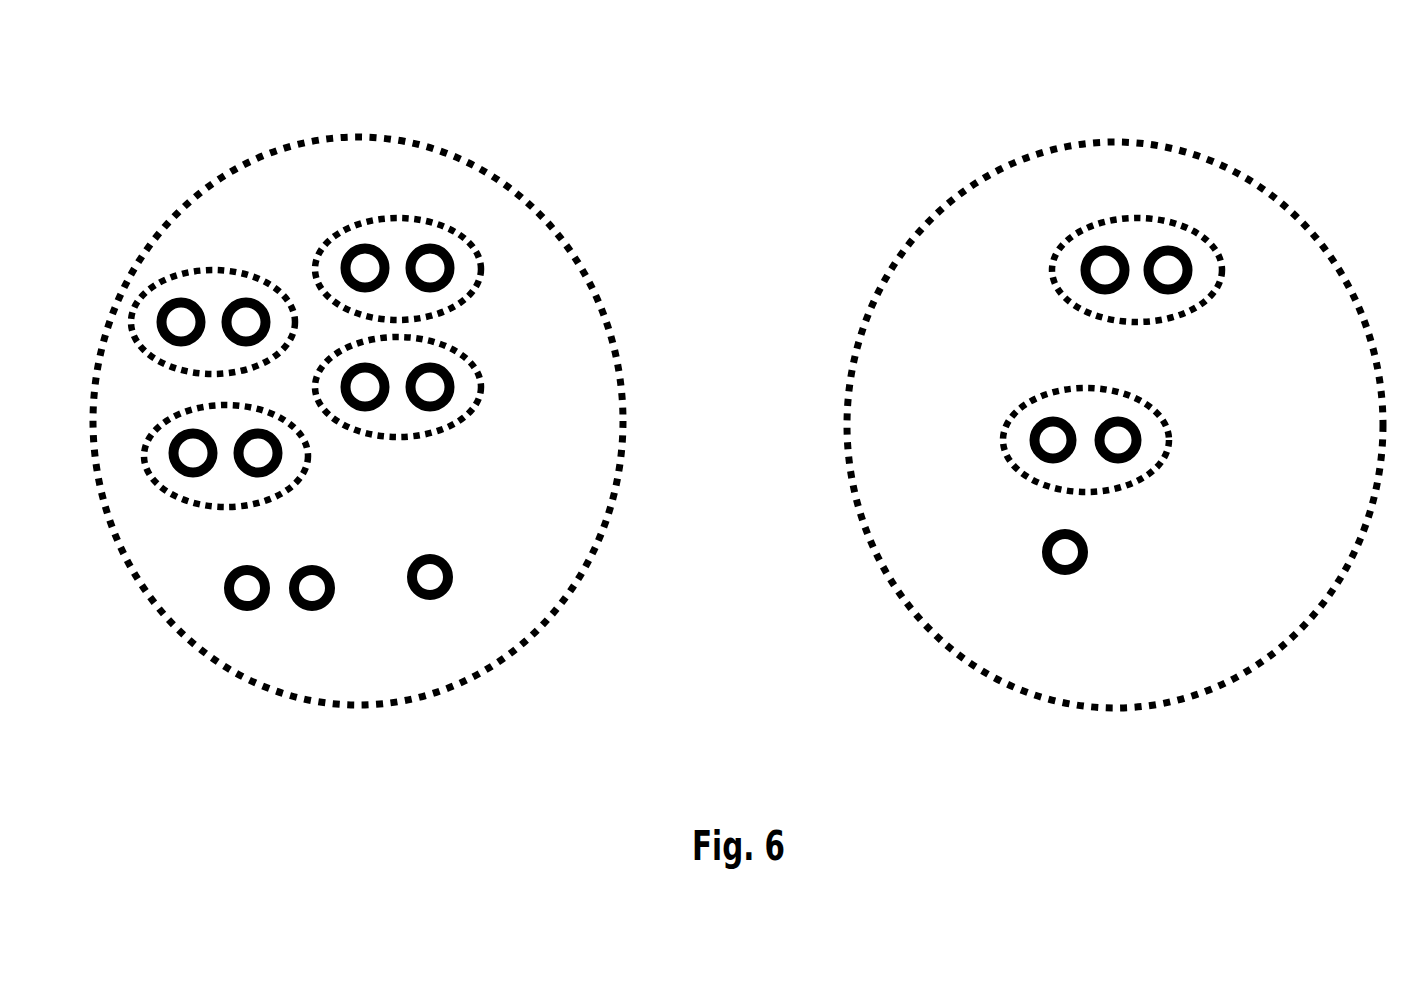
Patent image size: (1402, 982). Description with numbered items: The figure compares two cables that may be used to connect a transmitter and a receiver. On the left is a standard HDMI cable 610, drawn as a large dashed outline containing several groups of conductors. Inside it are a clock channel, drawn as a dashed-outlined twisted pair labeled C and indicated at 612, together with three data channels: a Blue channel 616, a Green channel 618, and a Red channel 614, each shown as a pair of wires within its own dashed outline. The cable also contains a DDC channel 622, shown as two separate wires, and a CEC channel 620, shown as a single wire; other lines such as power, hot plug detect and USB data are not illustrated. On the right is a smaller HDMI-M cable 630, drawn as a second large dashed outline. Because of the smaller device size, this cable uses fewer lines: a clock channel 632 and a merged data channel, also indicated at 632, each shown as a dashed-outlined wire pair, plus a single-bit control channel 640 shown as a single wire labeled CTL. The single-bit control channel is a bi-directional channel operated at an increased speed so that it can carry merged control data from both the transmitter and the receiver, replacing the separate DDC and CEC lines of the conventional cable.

The HDMI cable 610 is at (490, 177).
The clock (C) twisted pair 612 is at (480, 278).
The Red data channel 614 is at (473, 400).
The Blue data channel 616 is at (140, 298).
The Green data channel 618 is at (147, 447).
The CEC channel 620 is at (457, 578).
The DDC channel 622 is at (308, 565).
The HDMI-m cable 630 is at (933, 207).
The clock channel and merged data channel 632 is at (1052, 280).
The single-bit control channel 640 is at (1045, 543).